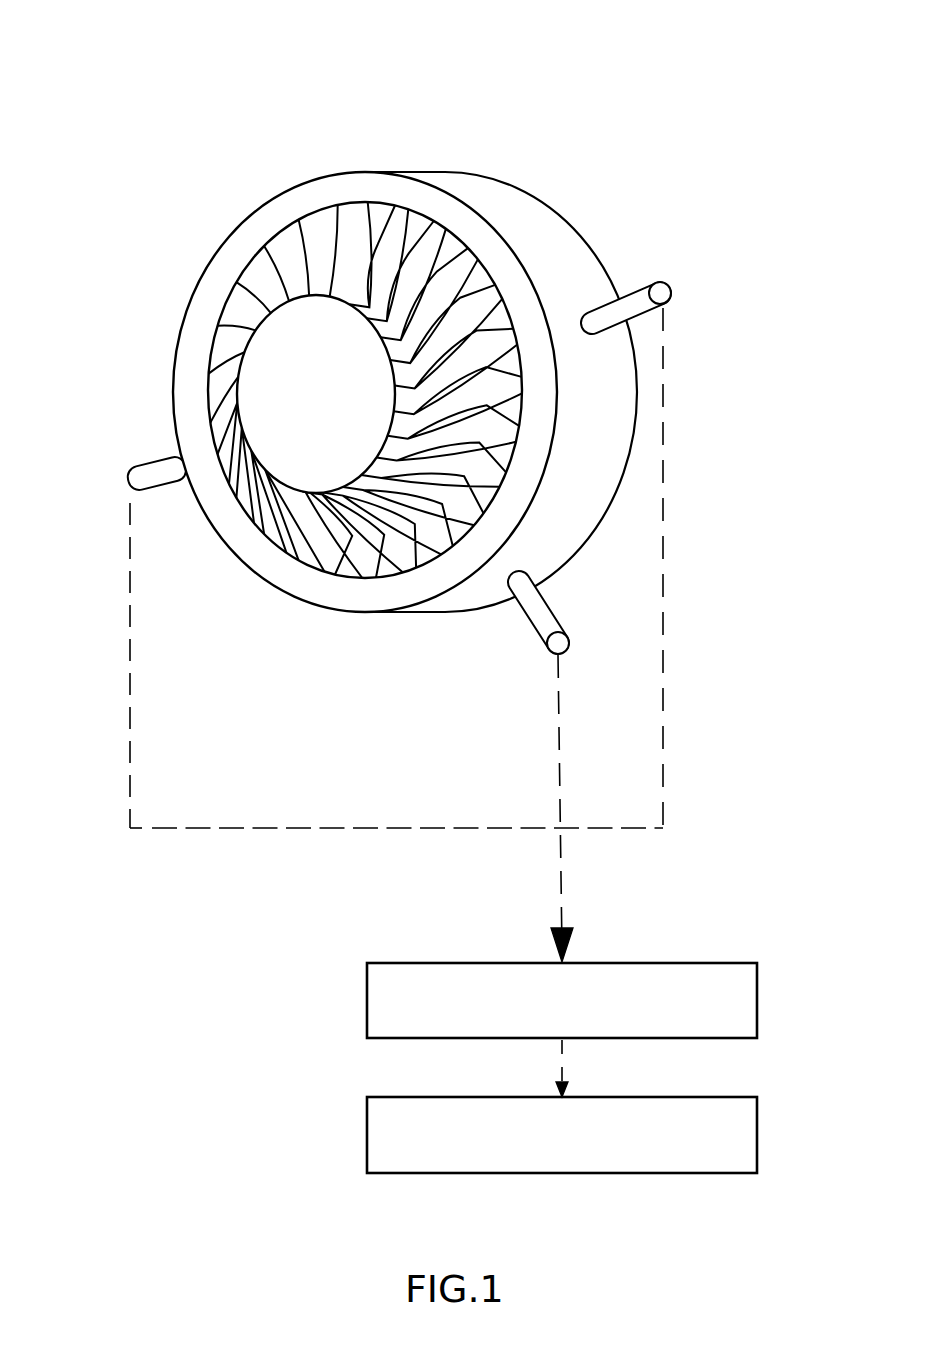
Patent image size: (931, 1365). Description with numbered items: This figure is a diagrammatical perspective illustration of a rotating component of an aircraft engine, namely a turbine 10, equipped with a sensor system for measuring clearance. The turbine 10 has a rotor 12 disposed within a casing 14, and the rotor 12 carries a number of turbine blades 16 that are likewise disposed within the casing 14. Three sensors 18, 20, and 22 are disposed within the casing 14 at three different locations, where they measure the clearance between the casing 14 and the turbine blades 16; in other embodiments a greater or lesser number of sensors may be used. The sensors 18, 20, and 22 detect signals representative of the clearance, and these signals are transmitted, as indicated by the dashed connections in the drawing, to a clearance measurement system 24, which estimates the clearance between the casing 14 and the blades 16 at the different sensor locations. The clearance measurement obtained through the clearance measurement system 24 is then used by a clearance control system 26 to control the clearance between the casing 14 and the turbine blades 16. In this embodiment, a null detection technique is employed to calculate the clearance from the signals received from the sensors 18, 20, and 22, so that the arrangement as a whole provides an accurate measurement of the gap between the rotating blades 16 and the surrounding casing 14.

The turbine 10 is at (148, 52).
The rotor 12 is at (283, 372).
The casing 14 is at (455, 171).
The turbine blades 16 is at (238, 378).
The sensor 18 is at (658, 282).
The sensor 20 is at (556, 608).
The sensor 22 is at (170, 491).
The clearance measurement system 24 is at (758, 1000).
The clearance control system 26 is at (758, 1133).